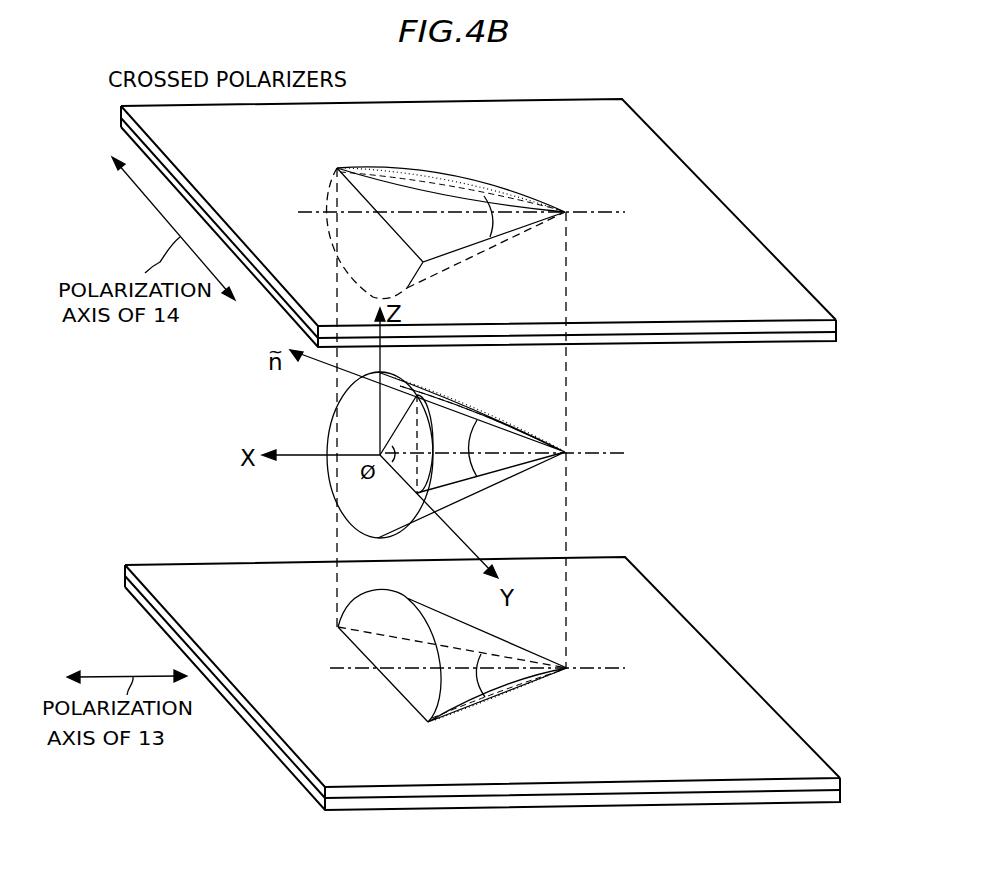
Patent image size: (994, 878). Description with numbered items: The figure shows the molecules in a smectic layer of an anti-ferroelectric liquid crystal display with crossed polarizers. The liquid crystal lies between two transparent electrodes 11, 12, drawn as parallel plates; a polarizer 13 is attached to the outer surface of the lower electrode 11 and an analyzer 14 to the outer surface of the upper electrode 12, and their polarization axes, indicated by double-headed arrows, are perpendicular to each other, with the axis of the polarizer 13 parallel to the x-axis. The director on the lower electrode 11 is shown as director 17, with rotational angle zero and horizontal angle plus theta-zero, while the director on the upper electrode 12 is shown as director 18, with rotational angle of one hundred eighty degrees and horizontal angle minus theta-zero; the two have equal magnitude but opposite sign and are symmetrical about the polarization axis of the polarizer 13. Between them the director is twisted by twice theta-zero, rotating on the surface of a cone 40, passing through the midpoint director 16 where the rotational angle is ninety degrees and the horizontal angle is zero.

The lower transparent electrode 11 is at (718, 662).
The upper transparent electrode 12 is at (760, 342).
The polarizer 13 is at (260, 740).
The analyzer 14 is at (715, 205).
The director at the midpoint 16 is at (495, 412).
The director on the lower electrode 17 is at (512, 702).
The director on the upper electrode 18 is at (470, 181).
The cone 40 is at (497, 487).